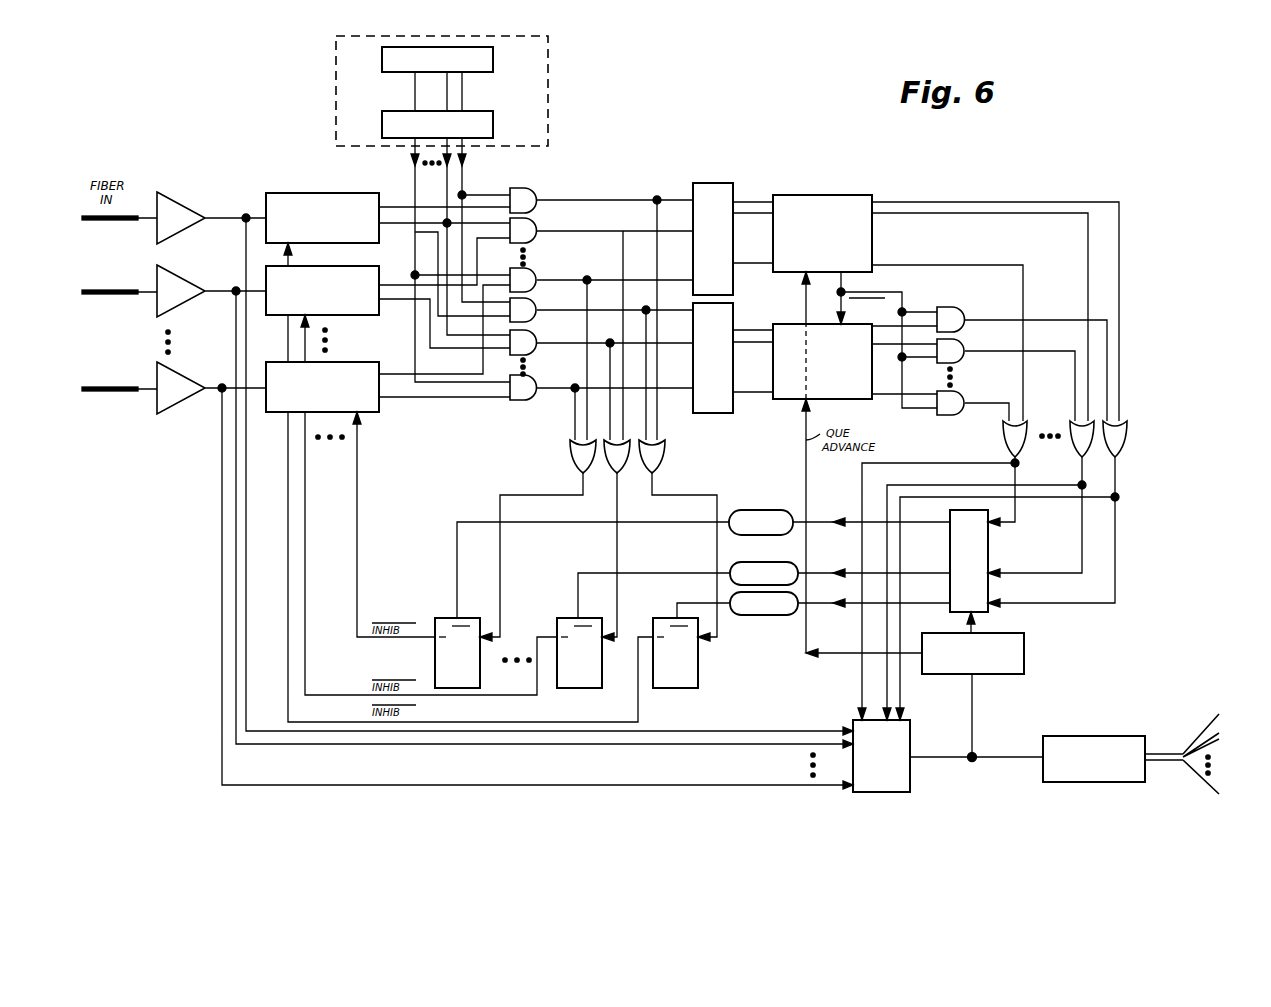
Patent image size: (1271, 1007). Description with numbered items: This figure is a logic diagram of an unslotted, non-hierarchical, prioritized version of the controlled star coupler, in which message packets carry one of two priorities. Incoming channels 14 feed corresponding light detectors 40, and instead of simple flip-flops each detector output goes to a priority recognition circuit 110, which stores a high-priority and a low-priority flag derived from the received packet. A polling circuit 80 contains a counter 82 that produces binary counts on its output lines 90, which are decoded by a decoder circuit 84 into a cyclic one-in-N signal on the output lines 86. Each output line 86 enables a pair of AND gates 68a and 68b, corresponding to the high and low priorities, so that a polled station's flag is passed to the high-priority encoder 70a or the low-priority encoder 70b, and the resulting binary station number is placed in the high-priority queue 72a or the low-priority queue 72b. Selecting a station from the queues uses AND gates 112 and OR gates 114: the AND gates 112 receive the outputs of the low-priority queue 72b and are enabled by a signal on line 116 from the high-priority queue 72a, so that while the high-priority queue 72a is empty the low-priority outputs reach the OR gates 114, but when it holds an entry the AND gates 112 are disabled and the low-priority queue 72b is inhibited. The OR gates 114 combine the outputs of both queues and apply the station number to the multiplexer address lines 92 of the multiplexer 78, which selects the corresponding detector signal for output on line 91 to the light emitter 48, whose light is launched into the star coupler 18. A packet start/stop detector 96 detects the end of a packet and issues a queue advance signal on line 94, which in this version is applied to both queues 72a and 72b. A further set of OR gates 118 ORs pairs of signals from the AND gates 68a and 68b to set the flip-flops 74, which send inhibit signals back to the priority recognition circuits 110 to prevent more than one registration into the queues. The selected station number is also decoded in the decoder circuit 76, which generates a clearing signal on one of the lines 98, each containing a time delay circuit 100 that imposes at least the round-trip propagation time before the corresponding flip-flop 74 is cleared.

The incoming channels 14 is at (95, 222).
The star coupler 18 is at (1162, 732).
The light detectors 40 is at (170, 197).
The light emitter 48 is at (1075, 736).
The high-priority AND gates 68a is at (538, 191).
The low-priority AND gates 68b is at (538, 222).
The high-priority encoder 70a is at (733, 190).
The low-priority encoder 70b is at (722, 413).
The high-priority queue 72a is at (855, 195).
The low-priority queue 72b is at (785, 324).
The D flip-flops 74 is at (437, 618).
The decoder circuit 76 is at (990, 606).
The multiplexer 78 is at (910, 785).
The polling circuit 80 is at (414, 91).
The counter 82 is at (493, 52).
The decoder circuit 84 is at (493, 125).
The output lines 86 is at (462, 178).
The output lines 90 is at (415, 88).
The output line 91 is at (948, 757).
The multiplexer address lines 92 is at (900, 680).
The queue advance line 94 is at (840, 655).
The packet start/stop detector 96 is at (1024, 662).
The clearing lines 98 is at (457, 533).
The time delay circuit 100 is at (775, 510).
The priority recognition circuits 110 is at (300, 193).
The AND gates 112 is at (958, 307).
The OR gates 114 is at (1003, 438).
The enabling/inhibit line 116 is at (905, 290).
The OR gates 118 is at (570, 458).